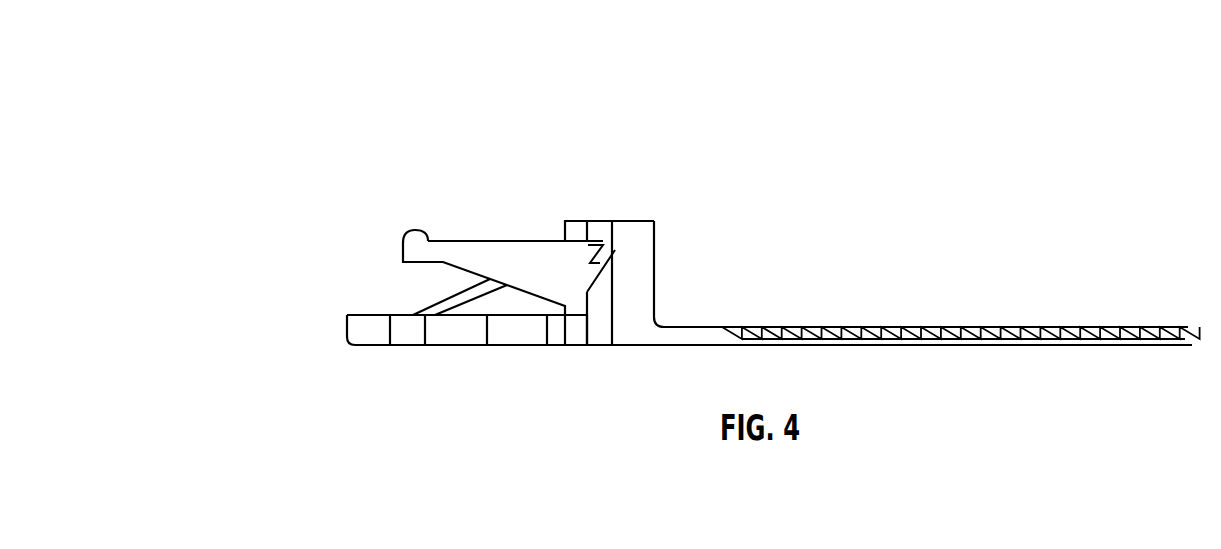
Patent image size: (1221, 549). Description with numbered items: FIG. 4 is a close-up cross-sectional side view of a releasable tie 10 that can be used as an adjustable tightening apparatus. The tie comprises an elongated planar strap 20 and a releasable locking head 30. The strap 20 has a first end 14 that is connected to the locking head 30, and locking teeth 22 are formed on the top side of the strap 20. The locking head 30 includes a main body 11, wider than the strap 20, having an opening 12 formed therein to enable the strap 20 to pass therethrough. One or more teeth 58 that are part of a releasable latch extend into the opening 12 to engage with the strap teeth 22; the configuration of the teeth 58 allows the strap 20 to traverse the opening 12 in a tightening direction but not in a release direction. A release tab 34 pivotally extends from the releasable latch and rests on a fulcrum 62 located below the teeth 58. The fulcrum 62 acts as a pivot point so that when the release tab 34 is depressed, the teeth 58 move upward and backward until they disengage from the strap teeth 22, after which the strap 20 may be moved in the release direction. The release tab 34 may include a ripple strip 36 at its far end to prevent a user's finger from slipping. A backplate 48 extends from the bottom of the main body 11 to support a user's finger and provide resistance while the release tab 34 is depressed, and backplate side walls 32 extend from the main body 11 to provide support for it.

The releasable tie 10 is at (655, 96).
The main body 11 is at (648, 254).
The opening 12 is at (597, 220).
The first end 14 is at (682, 332).
The strap 20 is at (1007, 233).
The locking teeth 22 is at (845, 327).
The locking head 30 is at (333, 271).
The backplate side walls 32 is at (437, 305).
The release tab 34 is at (465, 240).
The ripple strip 36 is at (413, 236).
The backplate 48 is at (455, 335).
The teeth 58 is at (615, 250).
The fulcrum 62 is at (573, 333).